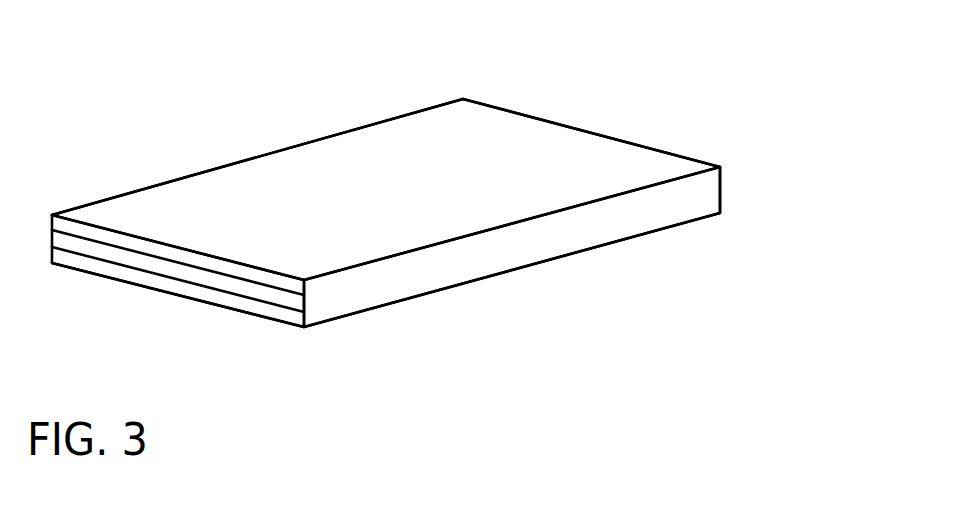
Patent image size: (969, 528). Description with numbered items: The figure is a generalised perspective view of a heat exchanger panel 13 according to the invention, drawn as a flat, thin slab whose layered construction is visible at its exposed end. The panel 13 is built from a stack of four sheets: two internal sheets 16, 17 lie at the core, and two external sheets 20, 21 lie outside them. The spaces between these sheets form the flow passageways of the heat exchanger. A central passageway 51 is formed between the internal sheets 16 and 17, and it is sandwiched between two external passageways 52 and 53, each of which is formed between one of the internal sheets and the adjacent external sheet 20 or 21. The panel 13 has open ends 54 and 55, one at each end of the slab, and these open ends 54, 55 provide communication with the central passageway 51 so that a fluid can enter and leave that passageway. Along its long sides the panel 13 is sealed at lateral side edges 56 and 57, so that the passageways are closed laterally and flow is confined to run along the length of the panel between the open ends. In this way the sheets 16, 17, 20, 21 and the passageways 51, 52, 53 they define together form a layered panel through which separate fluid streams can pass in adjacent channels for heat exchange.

The panel 13 is at (633, 132).
The internal sheet 16 is at (110, 246).
The internal sheet 17 is at (138, 270).
The external sheet 20 is at (167, 293).
The external sheet 21 is at (198, 252).
The central passageway 51 is at (253, 292).
The external passageway 52 is at (285, 275).
The external passageway 53 is at (283, 324).
The open end 54 is at (167, 330).
The open end 55 is at (553, 95).
The lateral side edge 56 is at (518, 252).
The lateral side edge 57 is at (305, 142).